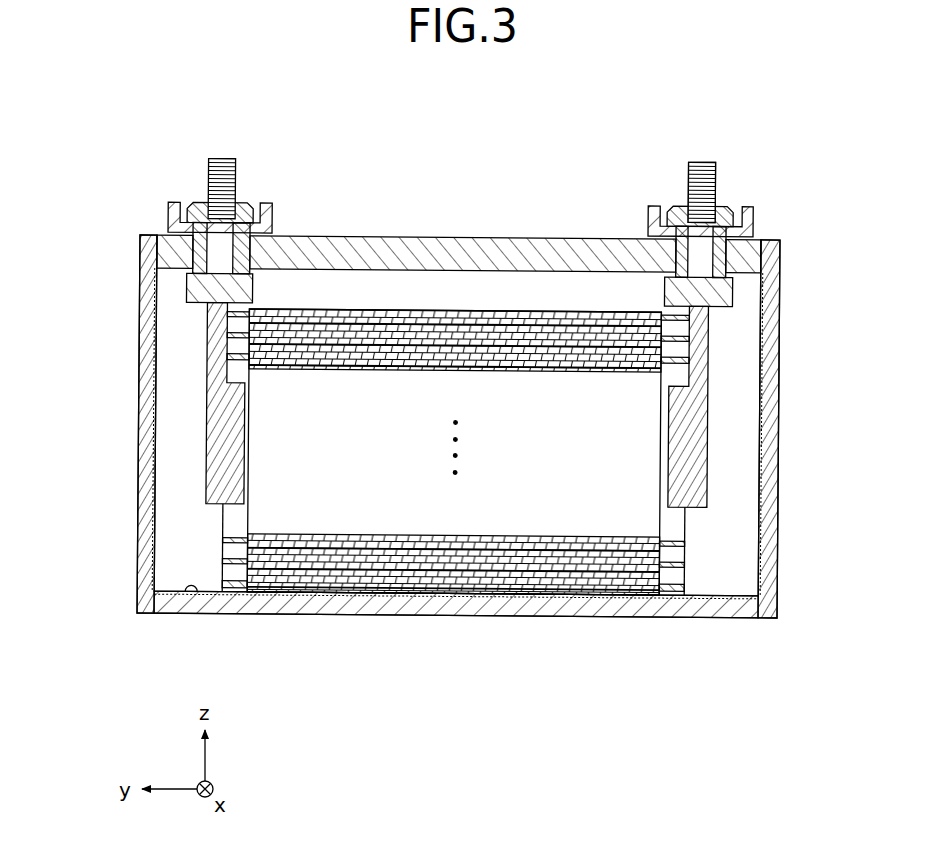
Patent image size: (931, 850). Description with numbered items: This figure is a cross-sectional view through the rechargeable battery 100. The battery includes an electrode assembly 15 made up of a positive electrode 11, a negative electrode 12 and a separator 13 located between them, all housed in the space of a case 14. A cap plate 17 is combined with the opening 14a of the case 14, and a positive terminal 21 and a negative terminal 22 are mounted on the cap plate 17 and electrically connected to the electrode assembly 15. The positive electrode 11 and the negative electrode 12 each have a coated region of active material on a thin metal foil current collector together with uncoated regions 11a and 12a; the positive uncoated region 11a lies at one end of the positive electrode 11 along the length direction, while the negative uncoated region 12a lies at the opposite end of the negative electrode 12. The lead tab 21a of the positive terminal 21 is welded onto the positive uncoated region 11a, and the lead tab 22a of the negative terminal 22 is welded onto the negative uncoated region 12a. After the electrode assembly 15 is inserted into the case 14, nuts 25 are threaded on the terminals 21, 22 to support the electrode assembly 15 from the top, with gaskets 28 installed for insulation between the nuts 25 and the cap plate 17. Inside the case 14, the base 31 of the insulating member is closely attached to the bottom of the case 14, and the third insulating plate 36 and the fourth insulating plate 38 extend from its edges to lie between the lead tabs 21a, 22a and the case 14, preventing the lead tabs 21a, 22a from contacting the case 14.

The rechargeable battery 100 is at (400, 188).
The case 14 is at (773, 495).
The opening 14a is at (758, 248).
The cap plate 17 is at (468, 240).
The positive terminal 21 is at (218, 157).
The negative terminal 22 is at (698, 162).
The lead tab 21a is at (218, 367).
The lead tab 22a is at (709, 369).
The nut 25 is at (722, 212).
The gasket 28 is at (655, 207).
The positive electrode 11 is at (330, 592).
The negative electrode 12 is at (592, 575).
The positive uncoated region 11a is at (235, 590).
The negative uncoated region 12a is at (667, 580).
The separator 13 is at (408, 568).
The electrode assembly 15 is at (494, 514).
The base 31 is at (186, 592).
The third insulating plate 36 is at (150, 418).
The fourth insulating plate 38 is at (762, 426).